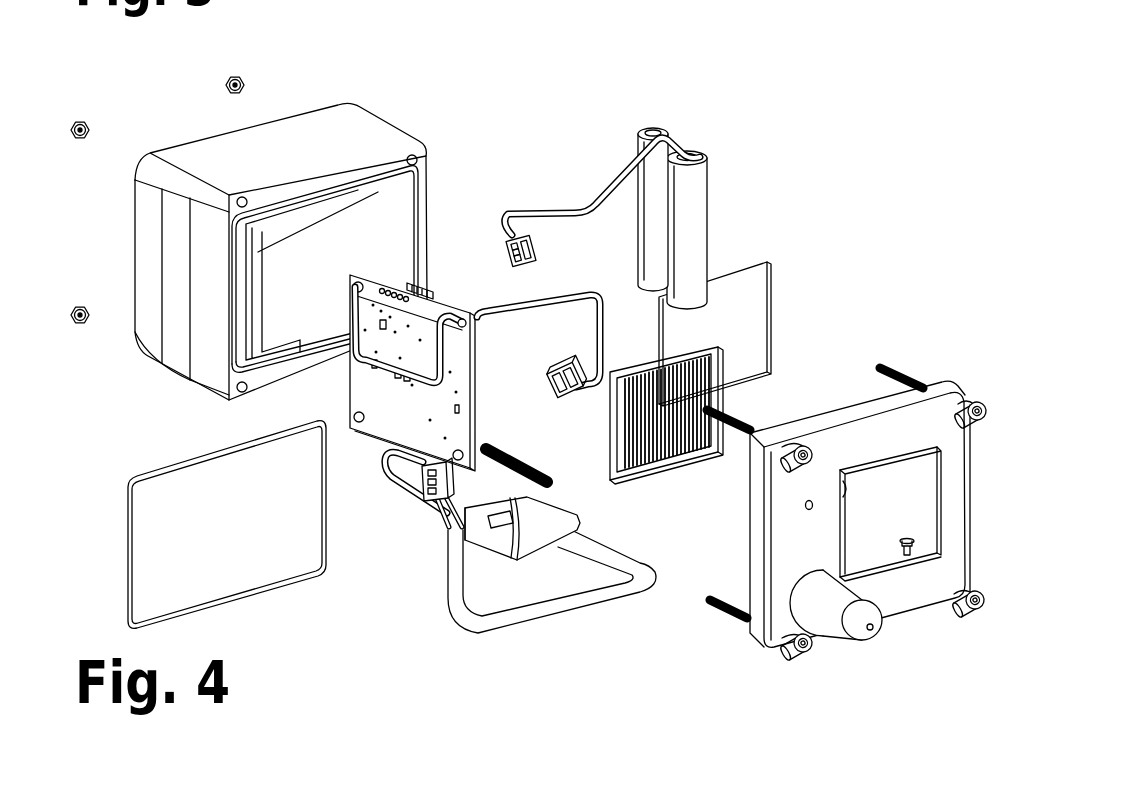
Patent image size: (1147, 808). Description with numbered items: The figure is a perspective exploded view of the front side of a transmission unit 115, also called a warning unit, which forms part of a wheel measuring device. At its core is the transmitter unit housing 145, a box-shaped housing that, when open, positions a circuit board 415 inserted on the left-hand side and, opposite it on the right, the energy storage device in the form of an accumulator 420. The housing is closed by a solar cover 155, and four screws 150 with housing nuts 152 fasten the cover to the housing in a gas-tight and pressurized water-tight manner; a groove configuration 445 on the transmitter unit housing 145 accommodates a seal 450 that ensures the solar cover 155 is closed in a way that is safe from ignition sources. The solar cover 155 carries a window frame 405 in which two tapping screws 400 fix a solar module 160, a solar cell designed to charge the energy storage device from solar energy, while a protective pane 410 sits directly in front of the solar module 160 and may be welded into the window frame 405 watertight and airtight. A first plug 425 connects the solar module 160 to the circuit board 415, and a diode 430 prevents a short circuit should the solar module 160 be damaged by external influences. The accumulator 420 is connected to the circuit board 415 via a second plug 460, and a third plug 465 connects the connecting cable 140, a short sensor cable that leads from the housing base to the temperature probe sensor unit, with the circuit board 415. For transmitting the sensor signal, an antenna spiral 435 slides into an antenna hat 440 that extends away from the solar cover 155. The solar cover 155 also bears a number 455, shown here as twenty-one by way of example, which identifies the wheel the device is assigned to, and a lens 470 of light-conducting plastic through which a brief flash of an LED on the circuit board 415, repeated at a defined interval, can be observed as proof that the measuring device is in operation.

The transmission unit 115 is at (356, 90).
The connecting cable 140 is at (562, 608).
The transmitter unit housing 145 is at (388, 135).
The screws 150 is at (808, 440).
The housing nuts 152 is at (88, 293).
The solar cover 155 is at (918, 425).
The solar module 160 is at (660, 472).
The tapping screws 400 is at (907, 537).
The window frame 405 is at (933, 562).
The protective pane 410 is at (737, 325).
The circuit board 415 is at (447, 303).
The accumulator 420 is at (690, 238).
The first plug 425 is at (557, 377).
The diode 430 is at (362, 352).
The antenna spiral 435 is at (547, 470).
The antenna hat 440 is at (825, 612).
The groove configuration 445 is at (232, 342).
The seal 450 is at (277, 431).
The number 455 is at (790, 541).
The second plug 460 is at (536, 256).
The third plug 465 is at (422, 481).
The lens 470 is at (800, 505).